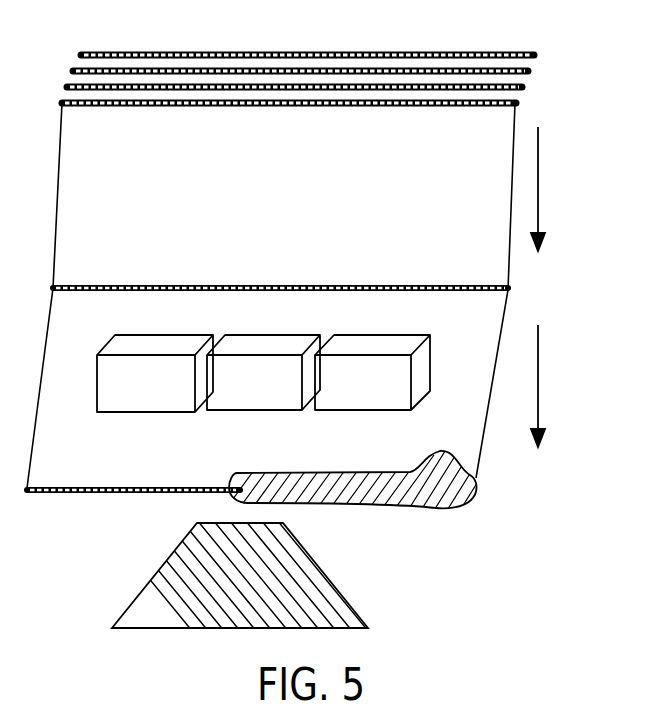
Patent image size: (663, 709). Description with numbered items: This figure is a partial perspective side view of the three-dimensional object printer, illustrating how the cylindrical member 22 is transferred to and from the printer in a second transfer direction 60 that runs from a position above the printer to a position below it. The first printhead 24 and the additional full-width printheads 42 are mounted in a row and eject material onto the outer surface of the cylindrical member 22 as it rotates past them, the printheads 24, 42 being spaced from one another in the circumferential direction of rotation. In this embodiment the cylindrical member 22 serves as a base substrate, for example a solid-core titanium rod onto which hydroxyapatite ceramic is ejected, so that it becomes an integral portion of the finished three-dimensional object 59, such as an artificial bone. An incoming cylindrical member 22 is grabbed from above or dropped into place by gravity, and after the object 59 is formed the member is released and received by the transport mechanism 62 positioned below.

The cylindrical member 22 is at (62, 92).
The additional full-width printhead 42 is at (120, 412).
The first printhead 24 is at (350, 410).
The three-dimensional object 59 is at (245, 473).
The transport mechanism 62 is at (330, 576).
The second transfer direction 60 is at (538, 173).